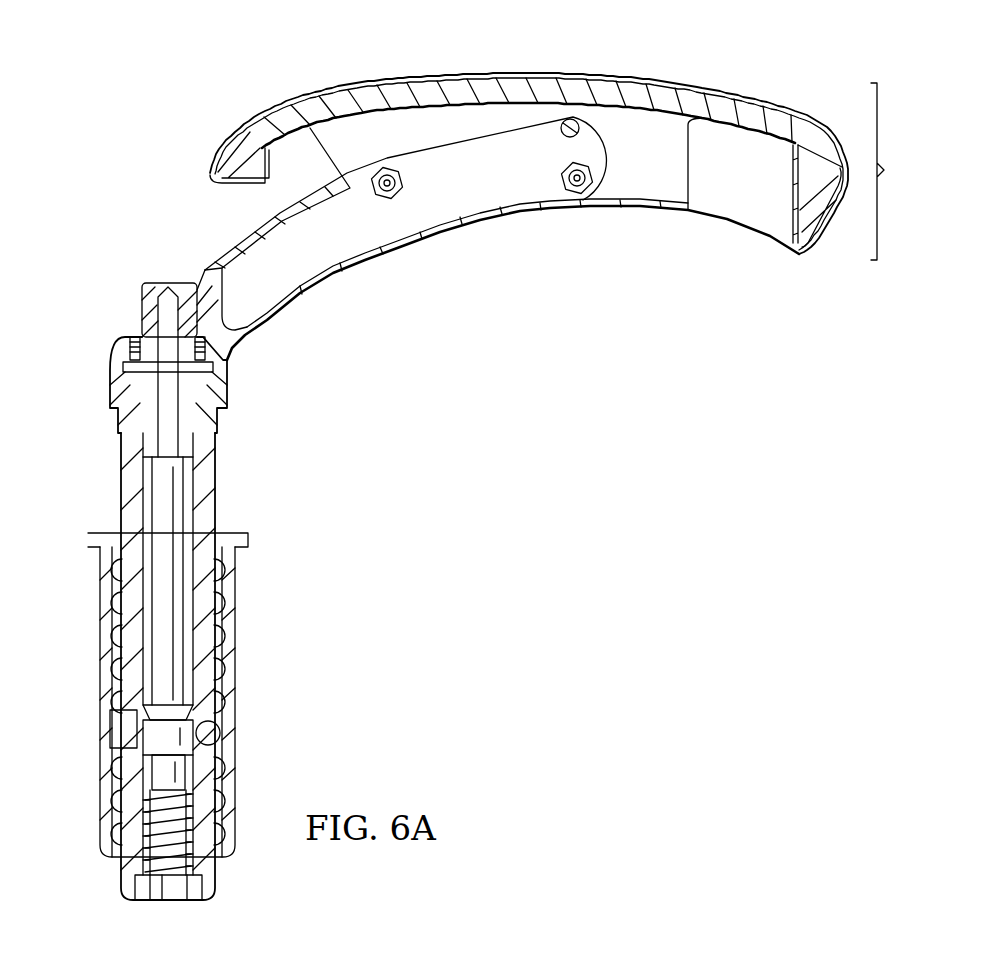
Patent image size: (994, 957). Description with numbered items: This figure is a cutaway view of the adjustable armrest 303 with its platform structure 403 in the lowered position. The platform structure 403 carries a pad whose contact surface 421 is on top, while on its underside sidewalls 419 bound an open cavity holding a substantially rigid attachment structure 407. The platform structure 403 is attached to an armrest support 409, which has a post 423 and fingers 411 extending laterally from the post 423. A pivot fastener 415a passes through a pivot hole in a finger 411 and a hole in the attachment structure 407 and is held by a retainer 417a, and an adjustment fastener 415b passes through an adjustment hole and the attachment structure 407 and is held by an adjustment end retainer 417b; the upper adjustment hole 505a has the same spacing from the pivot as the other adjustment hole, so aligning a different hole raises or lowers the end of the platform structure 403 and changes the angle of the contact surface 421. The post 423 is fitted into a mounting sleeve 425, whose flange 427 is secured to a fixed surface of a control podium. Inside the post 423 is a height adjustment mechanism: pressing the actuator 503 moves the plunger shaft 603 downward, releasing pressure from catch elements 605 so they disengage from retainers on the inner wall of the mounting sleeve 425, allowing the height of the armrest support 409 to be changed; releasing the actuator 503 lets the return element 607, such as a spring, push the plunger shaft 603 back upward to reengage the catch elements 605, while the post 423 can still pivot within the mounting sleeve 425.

The adjustable armrest 303 is at (98, 78).
The contact surface 421 is at (487, 73).
The upper adjustment hole 505a is at (570, 119).
The retainer 417a is at (403, 180).
The adjustment end retainer 417b is at (560, 173).
The platform structure 403 is at (905, 171).
The pivot fastener 415a is at (387, 195).
The adjustment fastener 415b is at (580, 190).
The attachment structure 407 is at (647, 187).
The finger 411 is at (483, 213).
The sidewall 419 is at (753, 237).
The armrest support 409 is at (267, 317).
The actuator 503 is at (155, 282).
The post 423 is at (120, 473).
The plunger shaft 603 is at (183, 508).
The flange 427 is at (88, 537).
The mounting sleeve 425 is at (100, 627).
The catch element 605 is at (115, 732).
The return element 607 is at (163, 843).